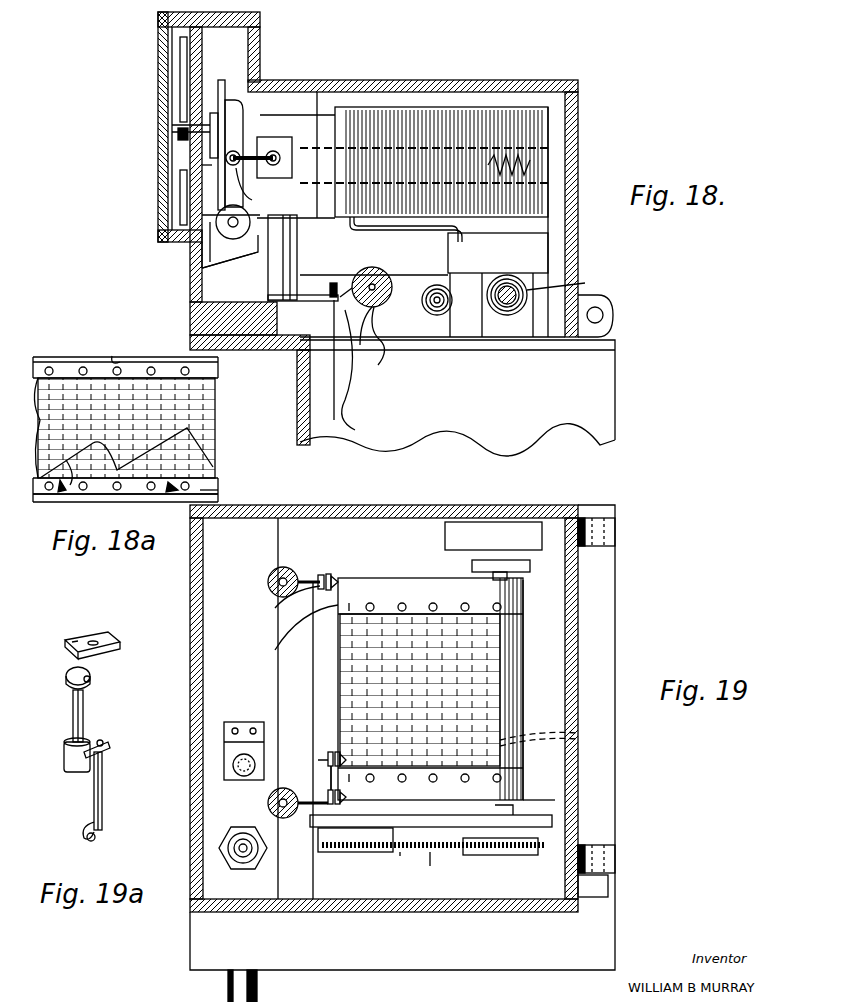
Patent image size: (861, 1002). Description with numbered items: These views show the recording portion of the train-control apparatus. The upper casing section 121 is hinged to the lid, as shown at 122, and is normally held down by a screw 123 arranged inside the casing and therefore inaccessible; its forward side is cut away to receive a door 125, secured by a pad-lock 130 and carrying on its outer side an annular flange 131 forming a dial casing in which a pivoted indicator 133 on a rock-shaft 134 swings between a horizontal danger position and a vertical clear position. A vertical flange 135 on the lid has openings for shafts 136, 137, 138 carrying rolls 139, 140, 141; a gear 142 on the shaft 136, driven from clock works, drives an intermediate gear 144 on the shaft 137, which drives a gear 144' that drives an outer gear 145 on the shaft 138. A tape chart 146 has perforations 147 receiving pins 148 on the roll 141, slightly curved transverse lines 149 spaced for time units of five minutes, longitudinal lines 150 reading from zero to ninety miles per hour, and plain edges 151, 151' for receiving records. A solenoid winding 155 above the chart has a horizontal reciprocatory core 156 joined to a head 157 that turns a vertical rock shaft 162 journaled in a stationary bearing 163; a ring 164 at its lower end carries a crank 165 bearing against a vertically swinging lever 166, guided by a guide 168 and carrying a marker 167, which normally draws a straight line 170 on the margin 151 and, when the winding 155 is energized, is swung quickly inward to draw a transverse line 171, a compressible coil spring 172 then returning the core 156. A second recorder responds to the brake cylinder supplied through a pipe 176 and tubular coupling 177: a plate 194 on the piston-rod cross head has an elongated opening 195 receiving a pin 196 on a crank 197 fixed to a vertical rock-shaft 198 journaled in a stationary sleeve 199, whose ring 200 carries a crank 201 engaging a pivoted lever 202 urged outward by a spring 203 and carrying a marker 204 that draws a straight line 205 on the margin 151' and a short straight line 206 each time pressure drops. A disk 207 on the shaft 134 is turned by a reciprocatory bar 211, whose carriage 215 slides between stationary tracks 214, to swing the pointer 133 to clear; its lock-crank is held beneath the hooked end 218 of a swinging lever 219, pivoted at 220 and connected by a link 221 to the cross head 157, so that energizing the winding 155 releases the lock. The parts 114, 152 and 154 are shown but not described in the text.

In FIG. 18, the base plate 114 is at (457, 398).
In FIG. 18, the upper casing section 121 is at (578, 112).
In FIG. 19, the upper casing section 121 is at (432, 912).
In FIG. 18, the hinge 122 is at (603, 315).
In FIG. 19, the hinge 122 is at (605, 532).
In FIG. 19, the screw 123 is at (230, 760).
In FIG. 18, the door 125 is at (196, 268).
In FIG. 18, the pad-lock 130 is at (158, 20).
In FIG. 18, the annular flange or dial casing 131 is at (170, 55).
In FIG. 18, the pivoted arm or indicator 133 is at (182, 78).
In FIG. 18, the rock-shaft 134 is at (200, 127).
In FIG. 19, the vertical flange 135 is at (545, 800).
In FIG. 18, the shaft 136 is at (505, 318).
In FIG. 19, the shaft 136 is at (505, 856).
In FIG. 18, the shaft 137 is at (437, 318).
In FIG. 19, the shaft 137 is at (436, 869).
In FIG. 18, the shaft 138 is at (360, 345).
In FIG. 19, the shaft 138 is at (356, 852).
In FIG. 18, the roll 139 is at (570, 282).
In FIG. 18, the roll 140 is at (437, 285).
In FIG. 18, the roll 141 is at (372, 268).
In FIG. 19, the gear 142 is at (490, 856).
In FIG. 19, the intermediate gear 144 is at (433, 869).
In FIG. 19, the gear 144' is at (380, 877).
In FIG. 19, the outer gear 145 is at (335, 830).
In FIG. 18, the tape chart 146 is at (462, 262).
In FIG. 18A, the tape chart 146 is at (38, 390).
In FIG. 19, the tape chart 146 is at (412, 577).
In FIG. 19, the perforations 147 is at (528, 770).
In FIG. 18, the pins 148 is at (378, 365).
In FIG. 19, the pins 148 is at (293, 630).
In FIG. 19, the transverse lines 149 is at (570, 712).
In FIG. 18A, the longitudinal lines 150 is at (205, 466).
In FIG. 18A, the longitudinal edge 151 is at (124, 401).
In FIG. 19, the longitudinal edge 151 is at (430, 691).
In FIG. 18A, the margin 151' is at (240, 491).
In FIG. 19, the fitting 152 is at (328, 758).
In FIG. 18A, the pointer 154 is at (68, 495).
In FIG. 18, the solenoid winding 155 is at (505, 110).
In FIG. 18, the horizontal reciprocatory core 156 is at (426, 105).
In FIG. 18, the head 157 is at (281, 138).
In FIG. 19, the vertical rock shaft 162 is at (274, 568).
In FIG. 18, the stationary bearing 163 is at (298, 244).
In FIG. 19, the stationary bearing 163 is at (268, 582).
In FIG. 18, the ring 164 is at (330, 290).
In FIG. 18, the crank or pin 165 is at (325, 302).
In FIG. 19, the crank or pin 165 is at (308, 572).
In FIG. 18, the vertically swinging lever 166 is at (350, 405).
In FIG. 19, the vertically swinging lever 166 is at (275, 610).
In FIG. 18, the marker 167 is at (290, 352).
In FIG. 19, the marker 167 is at (334, 574).
In FIG. 18, the guide 168 is at (352, 285).
In FIG. 18A, the straight line 170 is at (160, 357).
In FIG. 18A, the transverse line 171 is at (114, 358).
In FIG. 18, the compressible coil spring 172 is at (532, 166).
In FIG. 19, the pipe 176 is at (222, 845).
In FIG. 19, the tubular coupling 177 is at (222, 860).
In FIG. 19A, the plate 194 is at (118, 640).
In FIG. 19A, the elongated opening 195 is at (94, 640).
In FIG. 19A, the pin 196 is at (91, 678).
In FIG. 19A, the crank 197 is at (66, 673).
In FIG. 19, the vertical rock-shaft 198 is at (268, 806).
In FIG. 19A, the vertical rock-shaft 198 is at (72, 698).
In FIG. 19, the stationary sleeve 199 is at (268, 798).
In FIG. 19A, the ring 200 is at (64, 752).
In FIG. 19, the crank or pin 201 is at (310, 815).
In FIG. 19A, the crank or pin 201 is at (110, 750).
In FIG. 19, the pivoted lever 202 is at (328, 788).
In FIG. 19A, the pivoted lever 202 is at (103, 792).
In FIG. 19A, the spring 203 is at (84, 816).
In FIG. 19, the marker 204 is at (342, 797).
In FIG. 19A, the marker 204 is at (102, 742).
In FIG. 18A, the straight line 205 is at (185, 498).
In FIG. 18A, the short straight line 206 is at (60, 492).
In FIG. 18, the disk 207 is at (180, 140).
In FIG. 18, the reciprocatory bar 211 is at (190, 182).
In FIG. 18, the stationary tracks 214 is at (194, 248).
In FIG. 18, the carriage 215 is at (212, 200).
In FIG. 18, the hooked end 218 is at (235, 105).
In FIG. 18, the swinging lever 219 is at (232, 133).
In FIG. 18, the pivot 220 is at (240, 236).
In FIG. 18, the link 221 is at (255, 193).